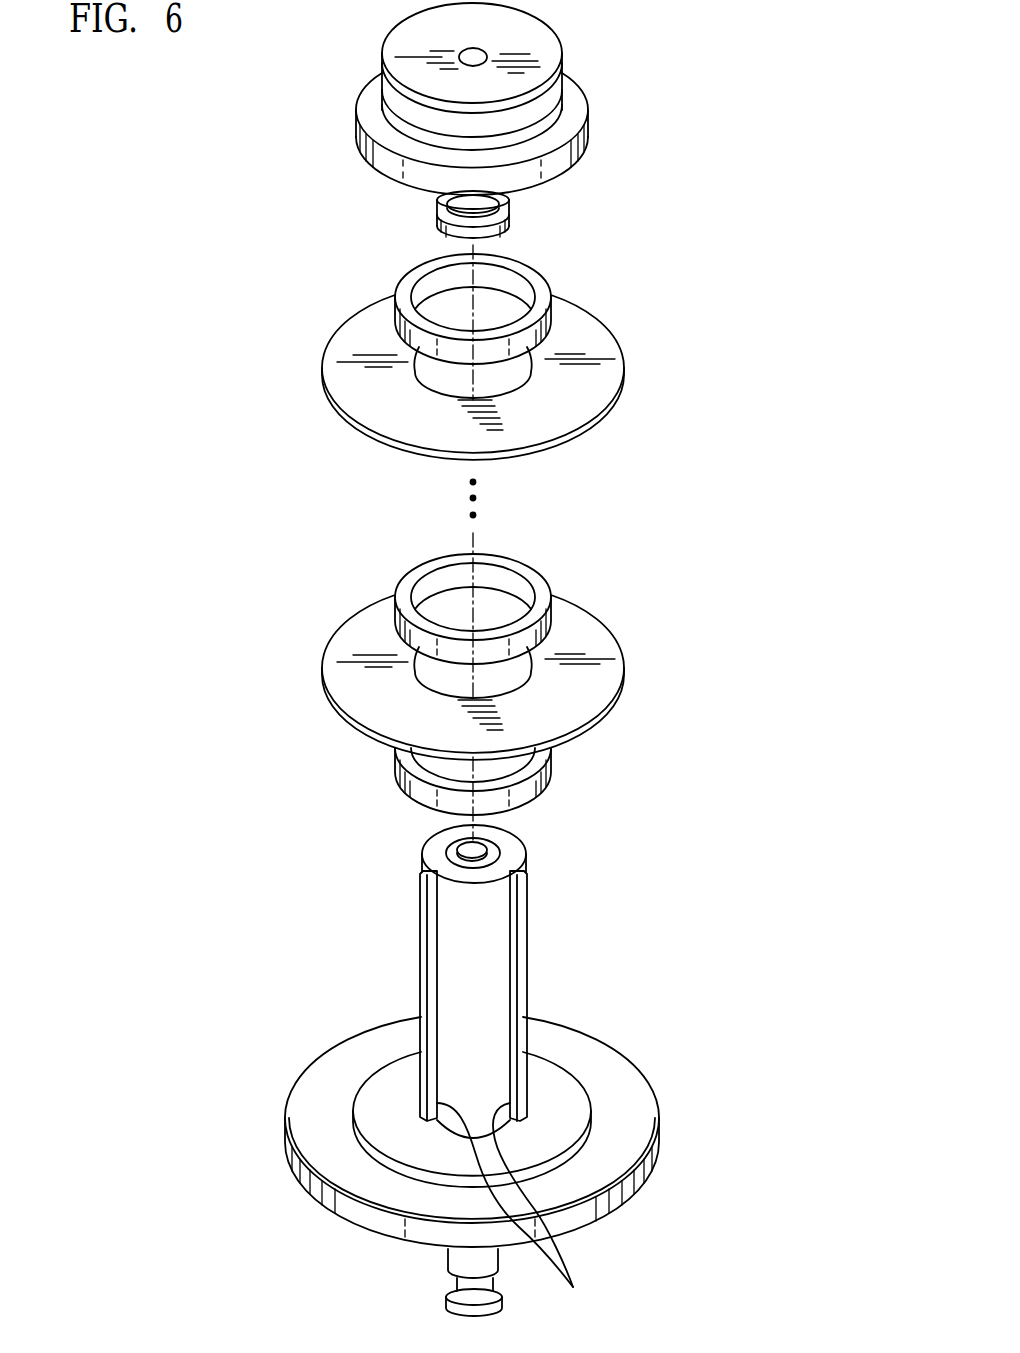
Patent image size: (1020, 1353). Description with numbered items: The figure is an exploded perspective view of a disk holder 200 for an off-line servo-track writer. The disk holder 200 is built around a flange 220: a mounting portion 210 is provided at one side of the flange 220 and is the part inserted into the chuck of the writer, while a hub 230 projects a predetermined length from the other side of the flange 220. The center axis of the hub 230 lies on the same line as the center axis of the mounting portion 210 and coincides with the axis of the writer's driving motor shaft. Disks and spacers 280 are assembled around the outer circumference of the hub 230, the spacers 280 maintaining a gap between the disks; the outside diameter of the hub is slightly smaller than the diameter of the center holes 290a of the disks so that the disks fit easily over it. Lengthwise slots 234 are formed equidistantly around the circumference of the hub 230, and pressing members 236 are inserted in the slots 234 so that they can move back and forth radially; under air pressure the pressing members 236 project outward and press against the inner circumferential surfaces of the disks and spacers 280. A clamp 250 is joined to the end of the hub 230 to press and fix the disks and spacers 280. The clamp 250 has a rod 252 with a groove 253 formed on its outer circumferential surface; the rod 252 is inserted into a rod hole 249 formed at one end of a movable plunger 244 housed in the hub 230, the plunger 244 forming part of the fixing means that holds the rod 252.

The disk holder 200 is at (300, 991).
The mounting portion 210 is at (452, 1255).
The flange 220 is at (640, 1110).
The hub 230 is at (490, 993).
The slots 234 is at (517, 1212).
The pressing members 236 is at (427, 950).
The movable plunger 244 is at (458, 855).
The rod hole 249 is at (490, 851).
The clamp 250 is at (590, 68).
The rod 252 is at (498, 226).
The groove 253 is at (490, 206).
The spacers 280 is at (413, 280).
The center holes 290a is at (512, 377).